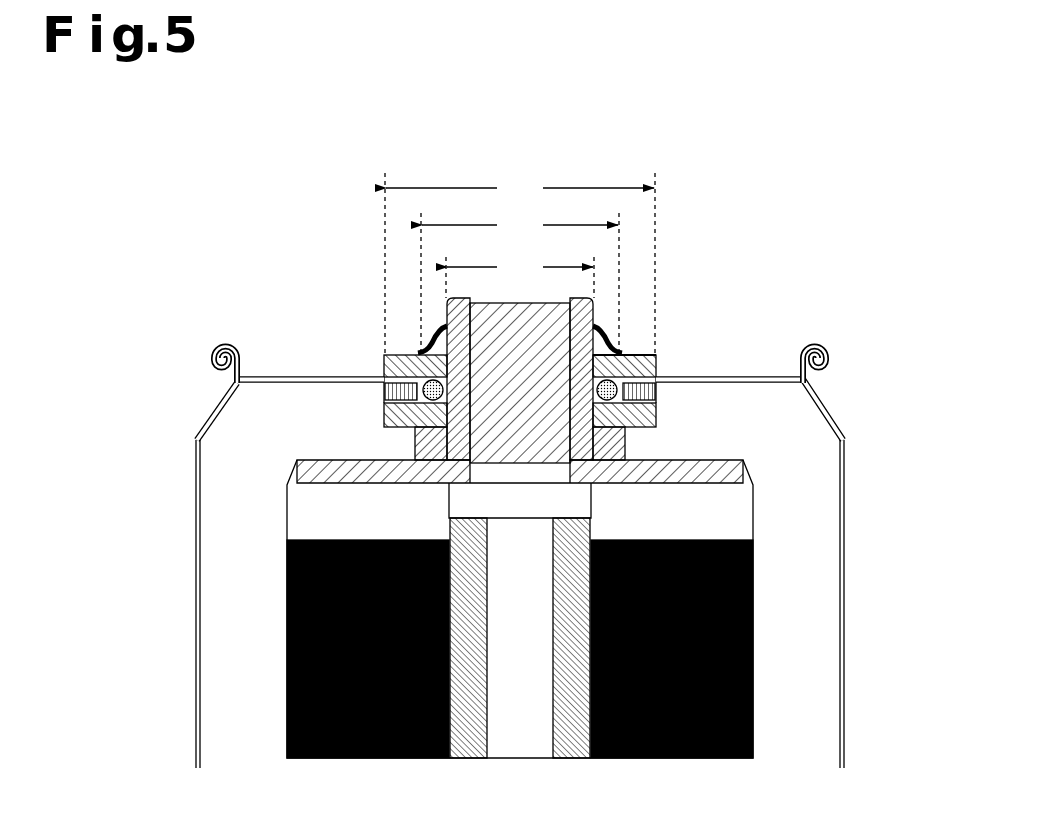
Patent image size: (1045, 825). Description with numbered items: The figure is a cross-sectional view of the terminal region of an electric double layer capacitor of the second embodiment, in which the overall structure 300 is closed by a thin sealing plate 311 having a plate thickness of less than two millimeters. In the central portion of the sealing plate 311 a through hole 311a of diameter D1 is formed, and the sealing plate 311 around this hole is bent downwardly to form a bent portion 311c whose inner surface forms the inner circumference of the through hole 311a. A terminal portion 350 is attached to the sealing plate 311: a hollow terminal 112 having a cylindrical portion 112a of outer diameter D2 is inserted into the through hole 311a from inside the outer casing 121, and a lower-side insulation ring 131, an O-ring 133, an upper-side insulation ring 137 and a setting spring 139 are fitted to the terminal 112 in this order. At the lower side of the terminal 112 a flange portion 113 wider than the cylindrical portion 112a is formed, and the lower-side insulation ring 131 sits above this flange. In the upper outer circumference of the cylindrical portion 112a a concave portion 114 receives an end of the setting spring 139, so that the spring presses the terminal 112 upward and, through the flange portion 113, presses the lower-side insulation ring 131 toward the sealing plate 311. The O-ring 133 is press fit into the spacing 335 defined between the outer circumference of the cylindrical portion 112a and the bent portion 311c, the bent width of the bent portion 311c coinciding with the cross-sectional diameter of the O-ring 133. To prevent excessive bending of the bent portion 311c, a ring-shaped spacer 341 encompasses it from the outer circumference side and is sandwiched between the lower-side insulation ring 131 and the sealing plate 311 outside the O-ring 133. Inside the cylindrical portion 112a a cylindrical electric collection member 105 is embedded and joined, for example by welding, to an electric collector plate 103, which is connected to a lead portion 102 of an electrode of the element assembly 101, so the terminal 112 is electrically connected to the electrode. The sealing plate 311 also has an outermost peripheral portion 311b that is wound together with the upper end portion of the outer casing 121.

The bearing unit 300 is at (546, 135).
The terminal portion 350 is at (748, 308).
The element assembly 101 is at (755, 647).
The lead portion 102 is at (738, 523).
The electric collector plate 103 is at (743, 462).
The electric collection member 105 is at (520, 437).
The terminal 112 is at (583, 293).
The cylindrical portion 112a is at (447, 297).
The flange portion 113 is at (413, 445).
The concave portion 114 is at (445, 327).
The outer casing 121 is at (848, 605).
The lower-side insulation ring 131 is at (657, 413).
The O-ring 133 is at (740, 377).
The upper-side insulation ring 137 is at (640, 353).
The setting spring 139 is at (608, 330).
The sealing plate 311 is at (230, 394).
The through hole 311a is at (382, 362).
The outermost peripheral portion 311b is at (210, 358).
The bent portion 311c is at (322, 377).
The spacing 335 is at (653, 371).
The spacer 341 is at (657, 395).